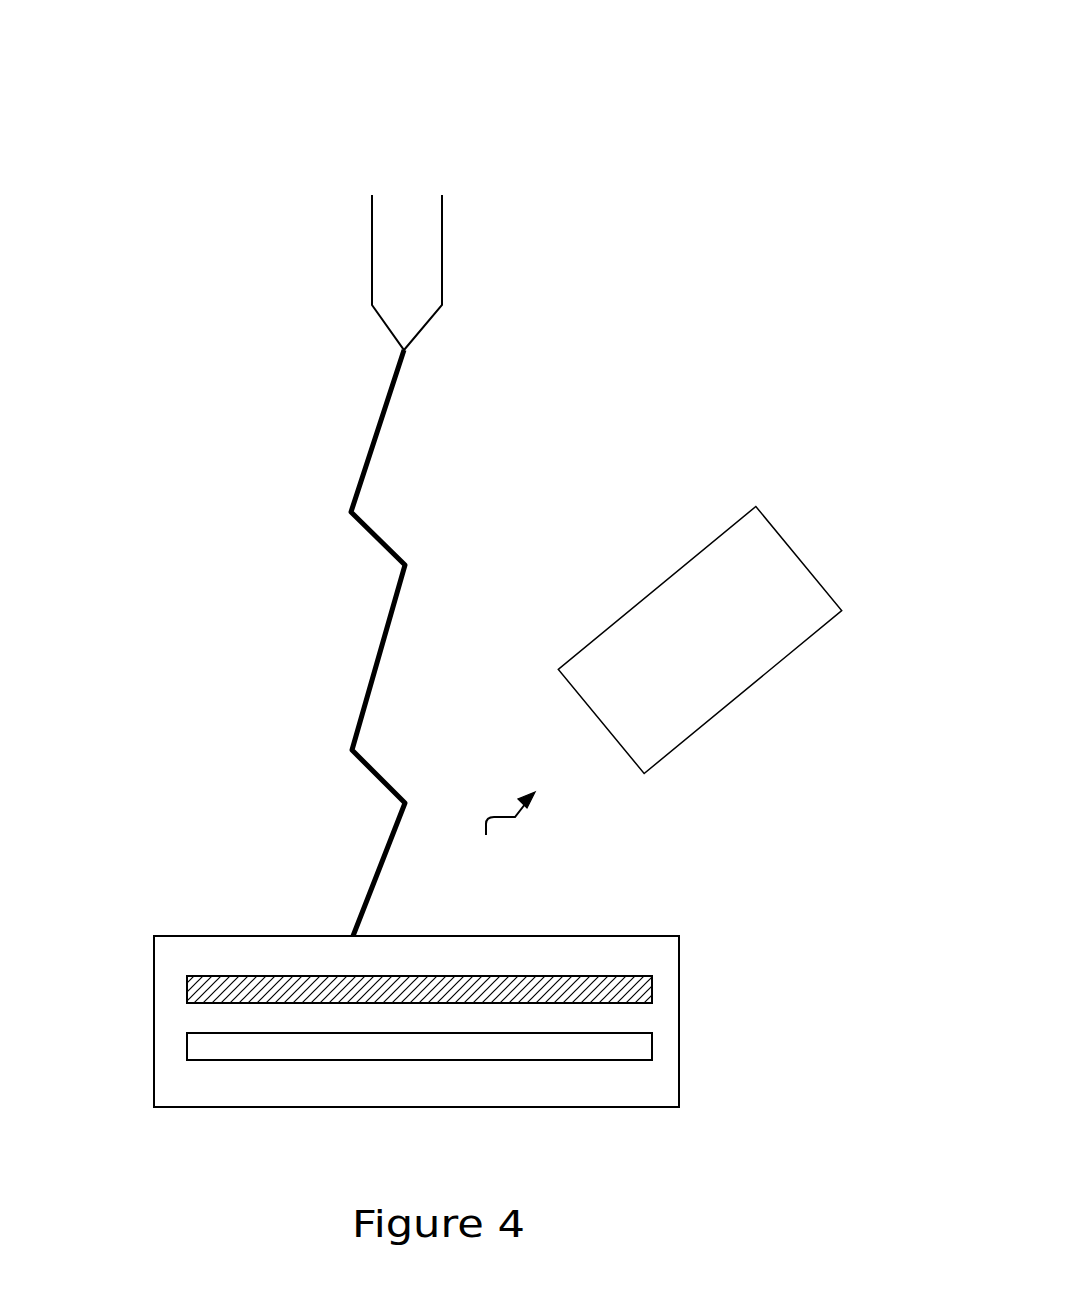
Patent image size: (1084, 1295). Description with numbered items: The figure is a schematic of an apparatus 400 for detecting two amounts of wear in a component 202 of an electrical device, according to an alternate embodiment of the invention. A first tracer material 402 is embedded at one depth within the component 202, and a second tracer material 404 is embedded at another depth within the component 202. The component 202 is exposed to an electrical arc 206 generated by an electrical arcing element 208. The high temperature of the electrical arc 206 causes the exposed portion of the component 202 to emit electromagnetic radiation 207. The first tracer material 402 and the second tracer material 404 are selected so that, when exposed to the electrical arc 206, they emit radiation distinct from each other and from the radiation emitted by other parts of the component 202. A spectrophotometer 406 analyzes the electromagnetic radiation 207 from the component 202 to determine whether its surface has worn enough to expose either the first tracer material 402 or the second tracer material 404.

The apparatus 400 is at (277, 245).
The electrical arcing element 208 is at (442, 270).
The electrical arc 206 is at (360, 477).
The spectrophotometer 406 is at (780, 532).
The electromagnetic radiation 207 is at (517, 820).
The component 202 is at (679, 937).
The first tracer material 402 is at (652, 995).
The second tracer material 404 is at (652, 1057).